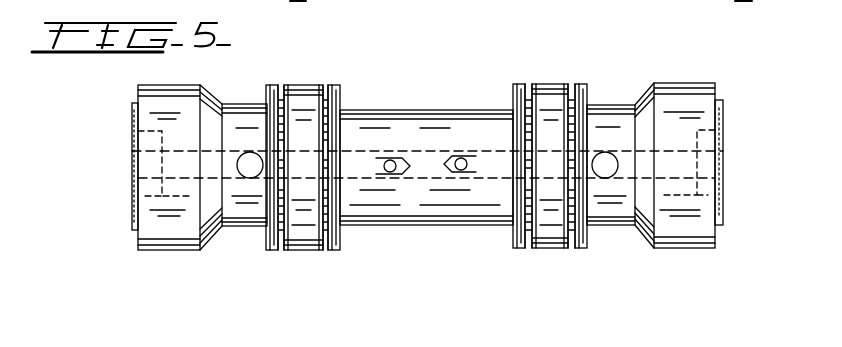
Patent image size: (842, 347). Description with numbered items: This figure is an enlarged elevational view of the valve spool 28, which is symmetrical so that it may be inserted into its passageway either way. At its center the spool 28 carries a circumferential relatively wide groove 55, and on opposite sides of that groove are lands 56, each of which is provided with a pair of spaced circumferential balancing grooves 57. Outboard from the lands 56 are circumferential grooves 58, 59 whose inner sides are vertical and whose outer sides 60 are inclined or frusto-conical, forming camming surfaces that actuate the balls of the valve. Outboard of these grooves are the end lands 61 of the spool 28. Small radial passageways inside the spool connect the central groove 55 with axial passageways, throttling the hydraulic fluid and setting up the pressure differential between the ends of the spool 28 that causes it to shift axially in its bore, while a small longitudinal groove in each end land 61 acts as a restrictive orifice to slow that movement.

The valve spool 28 is at (430, 162).
The circumferential relatively wide groove 55 is at (380, 110).
The lands 56 is at (297, 84).
The circumferential balancing grooves 57 is at (327, 250).
The circumferential groove 58 is at (622, 230).
The circumferential groove 59 is at (248, 230).
The inclined outer sides 60 is at (205, 237).
The end lands 61 is at (173, 250).